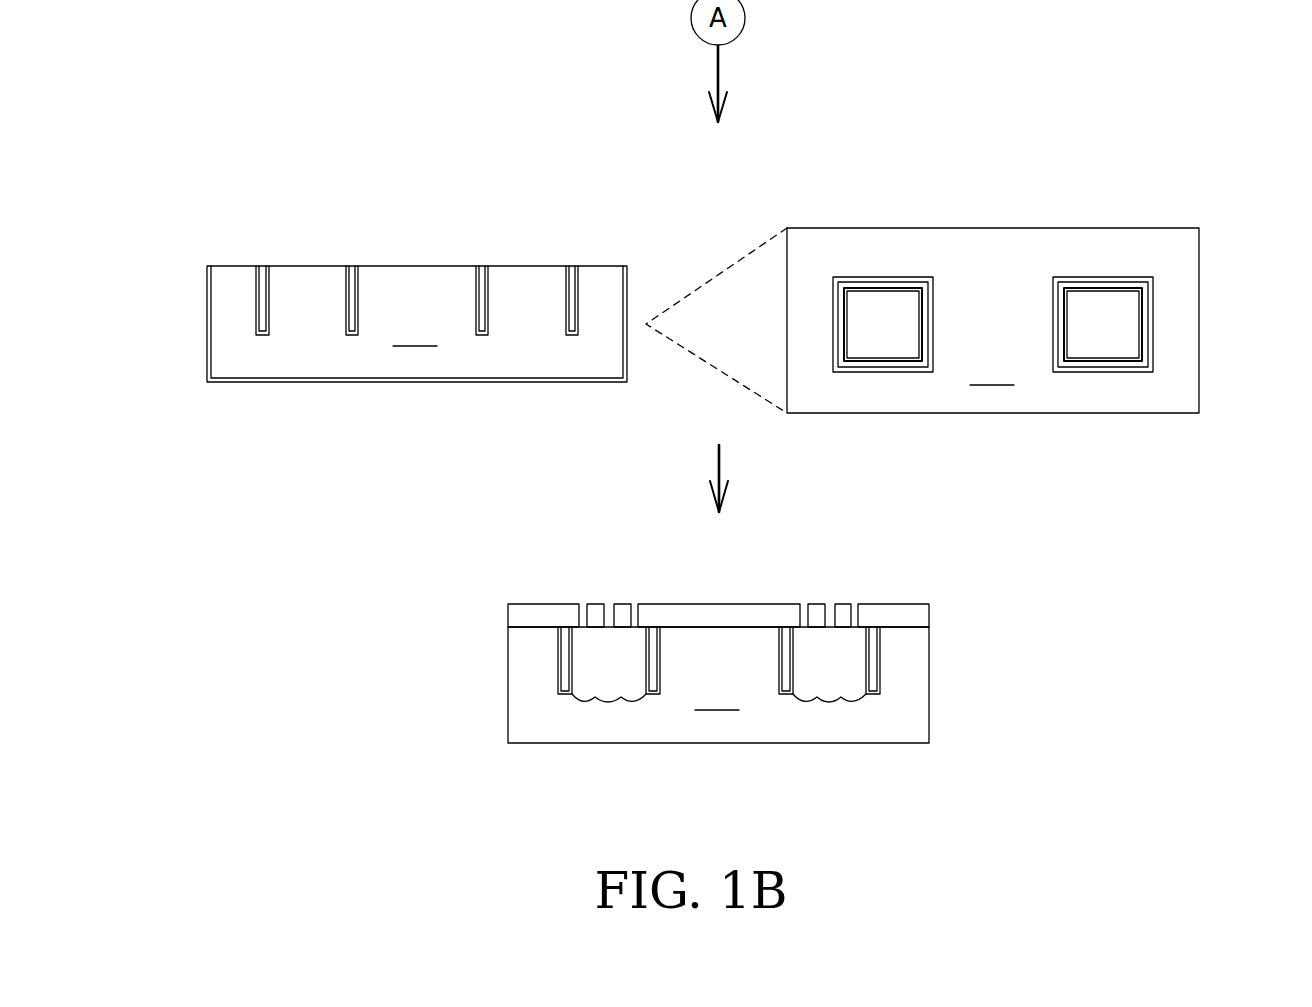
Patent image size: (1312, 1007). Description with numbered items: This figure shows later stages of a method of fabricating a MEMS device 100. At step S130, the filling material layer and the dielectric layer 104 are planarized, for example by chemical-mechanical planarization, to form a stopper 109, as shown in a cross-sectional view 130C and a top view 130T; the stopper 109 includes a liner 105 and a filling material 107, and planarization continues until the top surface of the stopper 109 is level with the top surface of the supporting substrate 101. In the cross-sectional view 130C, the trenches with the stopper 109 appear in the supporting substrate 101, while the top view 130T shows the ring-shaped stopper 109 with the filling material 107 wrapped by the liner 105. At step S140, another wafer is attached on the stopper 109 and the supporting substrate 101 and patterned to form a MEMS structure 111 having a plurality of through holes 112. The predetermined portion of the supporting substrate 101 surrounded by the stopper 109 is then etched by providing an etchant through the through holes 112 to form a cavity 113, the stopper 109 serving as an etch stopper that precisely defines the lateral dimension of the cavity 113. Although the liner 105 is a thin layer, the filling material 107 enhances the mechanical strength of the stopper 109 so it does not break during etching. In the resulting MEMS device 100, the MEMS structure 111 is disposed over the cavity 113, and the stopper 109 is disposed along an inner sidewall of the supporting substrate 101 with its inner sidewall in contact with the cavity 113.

The MEMS device 100 is at (920, 515).
The supporting substrate 101 is at (703, 515).
The dielectric layer 104 is at (207, 322).
The liner 105 is at (256, 298).
The filling material 107 is at (263, 270).
The stopper 109 is at (312, 177).
The MEMS structure 111 is at (522, 617).
The through holes 112 is at (610, 603).
The cavity 113 is at (615, 693).
The cross-sectional view 130C is at (398, 137).
The top view 130T is at (1196, 166).
The step S130 is at (722, 67).
The step S140 is at (723, 453).